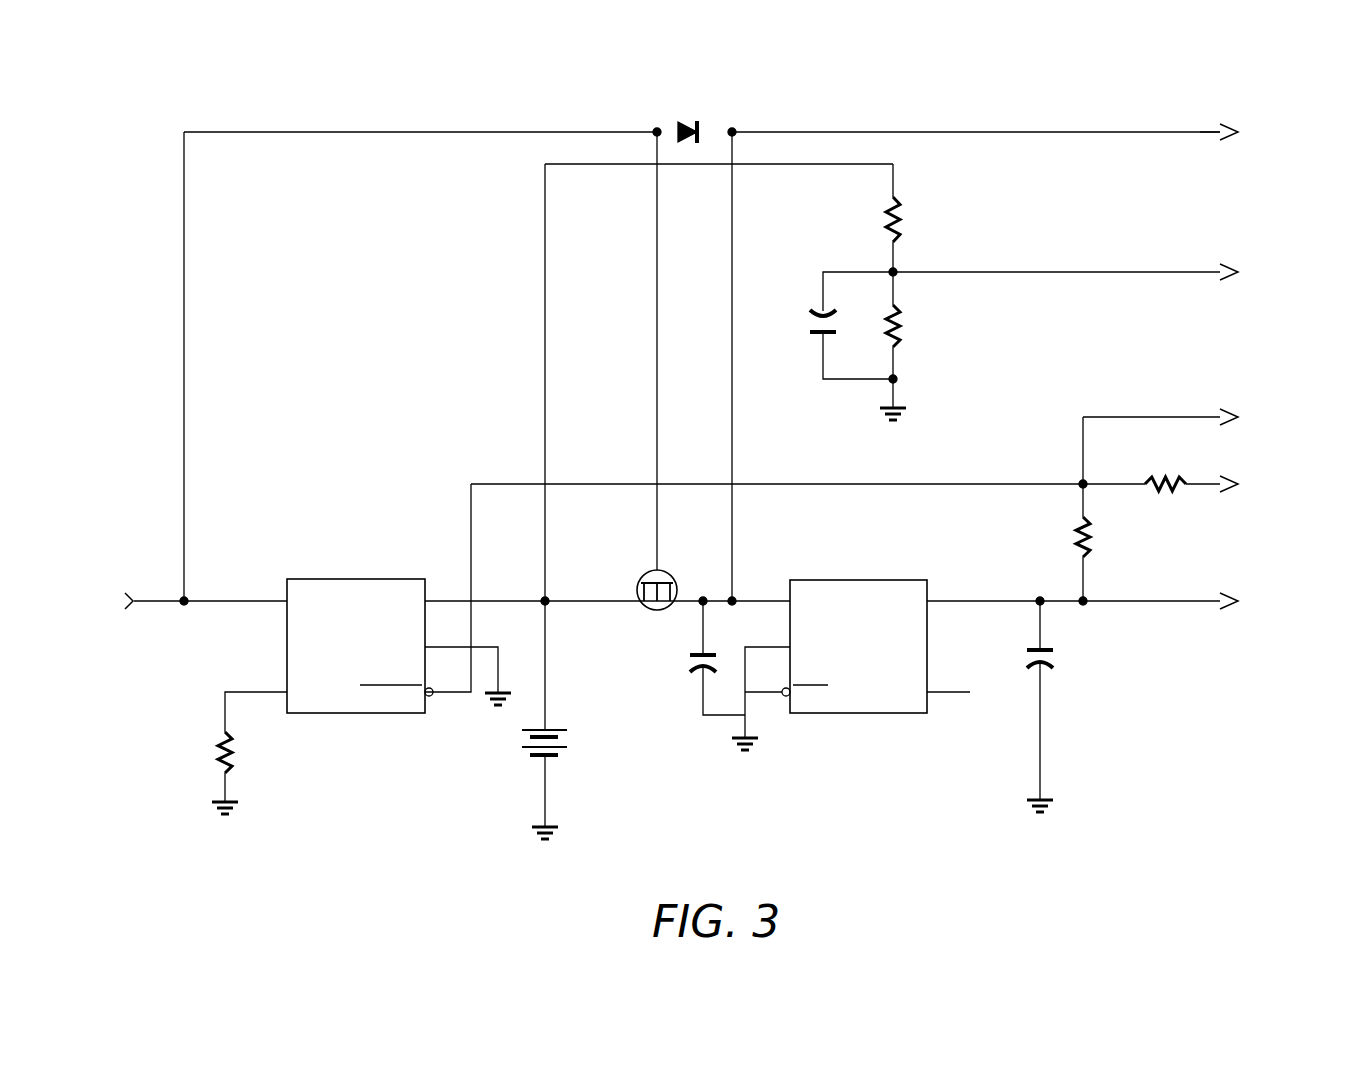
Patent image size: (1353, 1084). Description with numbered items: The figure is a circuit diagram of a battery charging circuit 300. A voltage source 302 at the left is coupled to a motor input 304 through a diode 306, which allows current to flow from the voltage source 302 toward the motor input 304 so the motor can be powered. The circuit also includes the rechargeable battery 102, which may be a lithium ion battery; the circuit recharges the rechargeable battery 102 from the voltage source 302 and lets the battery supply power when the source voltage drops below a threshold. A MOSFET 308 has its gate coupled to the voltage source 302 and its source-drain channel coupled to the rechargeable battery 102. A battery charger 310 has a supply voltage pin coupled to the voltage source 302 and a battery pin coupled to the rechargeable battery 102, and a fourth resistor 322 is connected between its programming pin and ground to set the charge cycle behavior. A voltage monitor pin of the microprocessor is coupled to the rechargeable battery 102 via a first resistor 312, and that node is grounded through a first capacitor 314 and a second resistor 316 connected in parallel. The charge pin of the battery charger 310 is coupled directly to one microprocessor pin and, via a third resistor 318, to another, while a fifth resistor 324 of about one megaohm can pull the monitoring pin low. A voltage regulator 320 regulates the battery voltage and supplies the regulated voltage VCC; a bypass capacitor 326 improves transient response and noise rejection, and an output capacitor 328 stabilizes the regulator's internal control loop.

The battery charging circuit 300 is at (850, 100).
The voltage source 302 is at (109, 602).
The motor input 304 is at (1245, 133).
The diode 306 is at (691, 121).
The MOSFET 308 is at (640, 585).
The battery charger 310 is at (378, 578).
The first resistor 312 is at (899, 218).
The first capacitor 314 is at (813, 322).
The second resistor 316 is at (901, 322).
The third resistor 318 is at (1176, 476).
The voltage regulator 320 is at (866, 579).
The fourth resistor 322 is at (215, 752).
The fifth resistor 324 is at (1075, 555).
The bypass capacitor 326 is at (690, 662).
The output capacitor 328 is at (1053, 663).
The rechargeable battery 102 is at (520, 738).